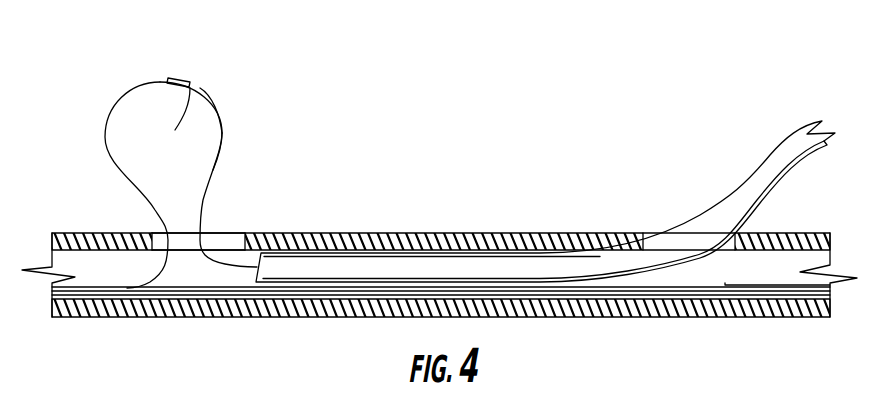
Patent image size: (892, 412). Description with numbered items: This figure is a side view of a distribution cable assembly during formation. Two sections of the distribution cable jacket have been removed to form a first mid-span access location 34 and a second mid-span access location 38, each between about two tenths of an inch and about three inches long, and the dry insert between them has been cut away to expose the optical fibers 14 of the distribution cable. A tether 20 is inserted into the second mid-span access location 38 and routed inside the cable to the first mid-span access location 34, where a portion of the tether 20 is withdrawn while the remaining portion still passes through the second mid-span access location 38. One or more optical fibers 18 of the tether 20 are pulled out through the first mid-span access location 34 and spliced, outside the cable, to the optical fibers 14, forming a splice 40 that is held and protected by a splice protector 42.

The optical fibers 14 is at (107, 127).
The optical fibers 18 is at (218, 108).
The tether 20 is at (220, 147).
The first mid-span access location 34 is at (227, 237).
The second mid-span access location 38 is at (660, 242).
The splice 40 is at (177, 78).
The splice protector 42 is at (171, 118).